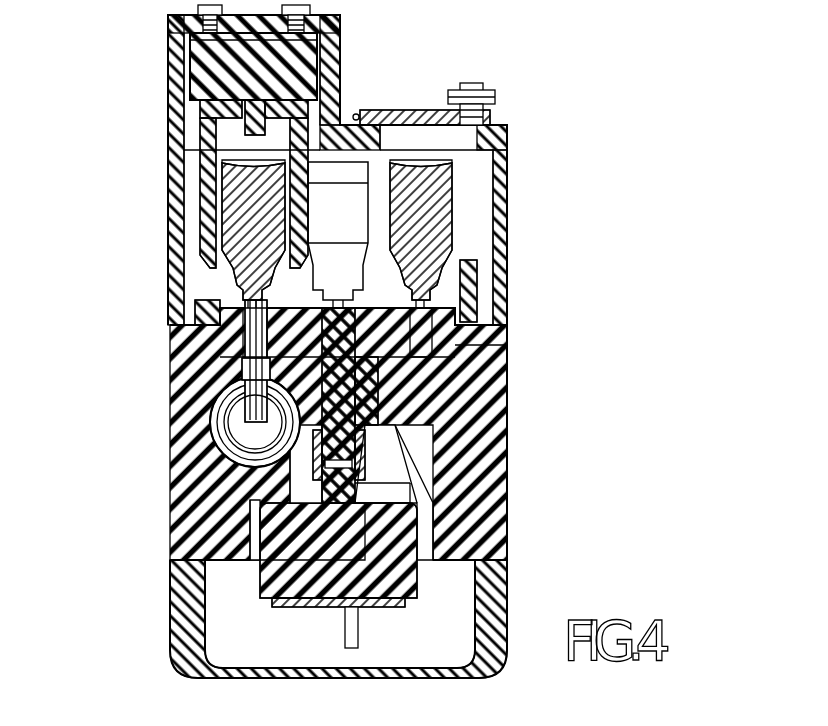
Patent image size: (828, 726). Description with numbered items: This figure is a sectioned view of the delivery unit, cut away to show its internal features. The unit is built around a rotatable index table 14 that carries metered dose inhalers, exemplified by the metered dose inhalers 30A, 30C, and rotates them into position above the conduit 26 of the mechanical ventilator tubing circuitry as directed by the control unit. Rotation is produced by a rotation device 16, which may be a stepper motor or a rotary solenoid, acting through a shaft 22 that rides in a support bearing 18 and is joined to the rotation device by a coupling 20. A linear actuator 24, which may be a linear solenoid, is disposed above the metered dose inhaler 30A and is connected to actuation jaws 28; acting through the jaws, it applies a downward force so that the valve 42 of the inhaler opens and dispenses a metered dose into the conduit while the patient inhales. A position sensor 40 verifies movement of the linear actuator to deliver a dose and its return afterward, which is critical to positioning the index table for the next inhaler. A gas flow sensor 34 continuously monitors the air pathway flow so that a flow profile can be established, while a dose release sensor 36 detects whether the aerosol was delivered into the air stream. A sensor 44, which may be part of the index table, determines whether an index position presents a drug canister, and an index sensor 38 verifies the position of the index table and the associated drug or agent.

The index table 14 is at (490, 343).
The rotation device 16 is at (402, 567).
The support bearing 18 is at (372, 420).
The coupling 20 is at (358, 468).
The shaft 22 is at (348, 338).
The linear actuator 24 is at (218, 93).
The conduit 26 is at (253, 457).
The actuation jaws 28 is at (215, 167).
The metered dose inhaler 30A is at (243, 218).
The metered dose inhaler 30C is at (440, 212).
The gas flow sensor 34 is at (250, 435).
The dose release sensor 36 is at (240, 418).
The index sensor 38 is at (275, 607).
The position sensor 40 is at (318, 35).
The valve 42 is at (205, 322).
The sensor 44 is at (463, 312).